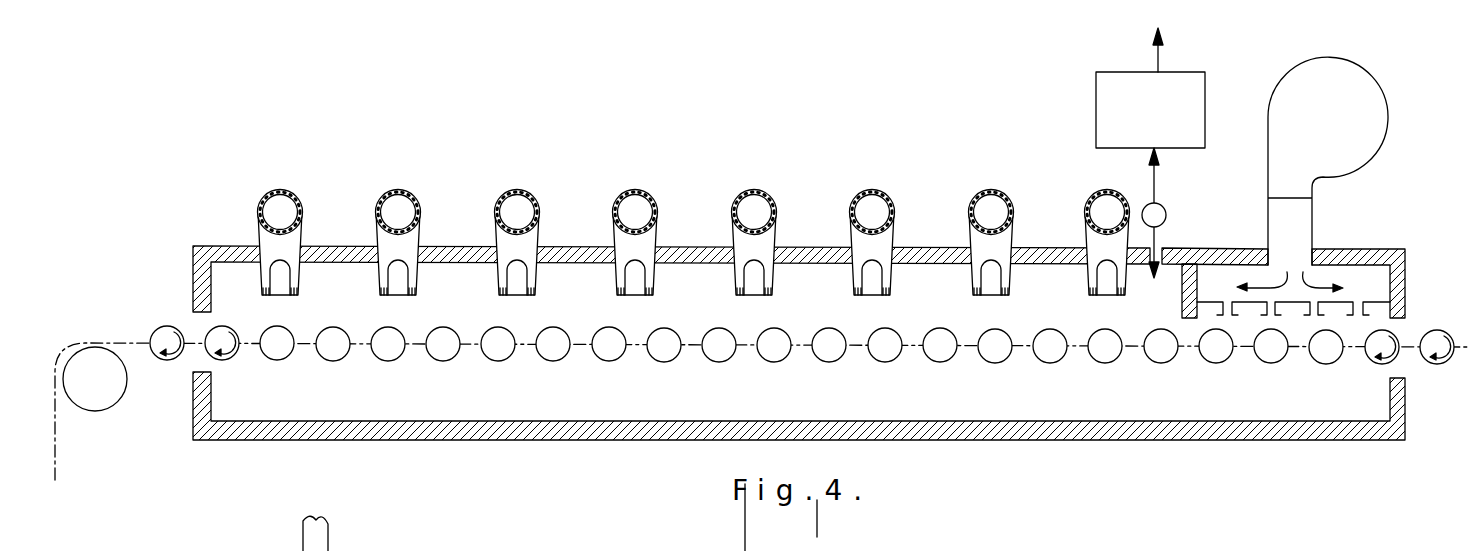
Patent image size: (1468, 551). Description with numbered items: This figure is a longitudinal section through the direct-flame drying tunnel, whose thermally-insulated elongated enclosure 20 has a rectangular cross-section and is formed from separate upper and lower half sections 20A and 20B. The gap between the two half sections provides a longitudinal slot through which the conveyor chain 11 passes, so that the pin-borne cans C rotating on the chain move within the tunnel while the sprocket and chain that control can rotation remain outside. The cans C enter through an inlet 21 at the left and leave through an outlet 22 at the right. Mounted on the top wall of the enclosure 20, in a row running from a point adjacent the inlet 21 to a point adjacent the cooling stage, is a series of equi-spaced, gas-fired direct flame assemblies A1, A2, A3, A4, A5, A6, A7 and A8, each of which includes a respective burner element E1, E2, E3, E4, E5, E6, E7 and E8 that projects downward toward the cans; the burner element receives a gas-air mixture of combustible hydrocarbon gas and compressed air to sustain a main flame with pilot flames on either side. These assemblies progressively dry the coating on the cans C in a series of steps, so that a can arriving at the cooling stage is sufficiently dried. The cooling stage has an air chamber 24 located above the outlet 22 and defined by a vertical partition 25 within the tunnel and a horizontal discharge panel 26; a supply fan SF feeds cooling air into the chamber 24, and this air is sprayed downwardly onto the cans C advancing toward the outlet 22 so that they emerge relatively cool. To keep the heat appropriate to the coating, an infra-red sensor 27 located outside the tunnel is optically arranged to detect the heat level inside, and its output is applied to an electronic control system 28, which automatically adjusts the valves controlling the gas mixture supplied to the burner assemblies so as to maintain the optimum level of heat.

The conveyor chain 11 is at (102, 360).
The thermally-insulated elongated enclosure 20 is at (777, 338).
The upper half section 20A is at (197, 275).
The lower half section 20B is at (610, 443).
The inlet 21 is at (200, 362).
The outlet 22 is at (1400, 365).
The air chamber 24 is at (1321, 270).
The vertical partition 25 is at (1182, 308).
The horizontal discharge panel 26 is at (1350, 302).
The infra-red sensor 27 is at (1163, 213).
The electronic control system 28 is at (1096, 113).
The supply fan SF is at (1368, 83).
The gas-fired direct flame assembly A1 is at (300, 227).
The gas-fired direct flame assembly A2 is at (418, 227).
The gas-fired direct flame assembly A3 is at (537, 227).
The gas-fired direct flame assembly A4 is at (655, 227).
The gas-fired direct flame assembly A5 is at (774, 227).
The gas-fired direct flame assembly A6 is at (892, 227).
The gas-fired direct flame assembly A7 is at (1011, 227).
The gas-fired direct flame assembly A8 is at (1088, 244).
The burner element E1 is at (303, 281).
The burner element E2 is at (421, 281).
The burner element E3 is at (540, 281).
The burner element E4 is at (658, 281).
The burner element E5 is at (777, 281).
The burner element E6 is at (895, 281).
The burner element E7 is at (1014, 281).
The burner element E8 is at (1085, 292).
The cans C is at (333, 358).